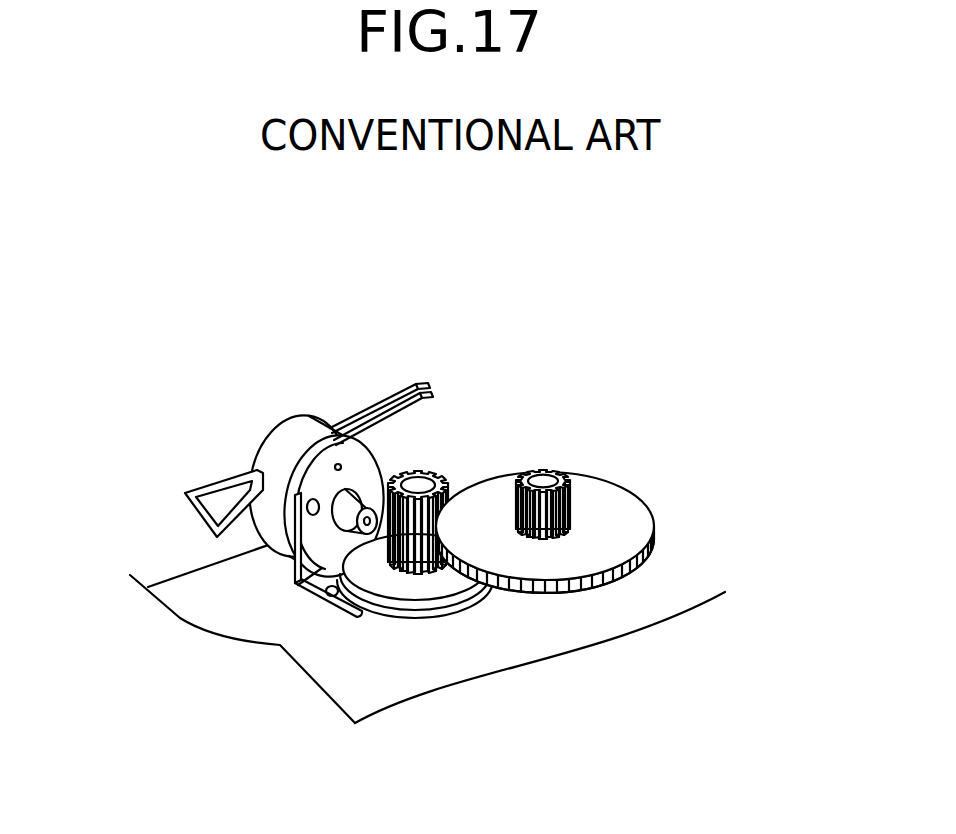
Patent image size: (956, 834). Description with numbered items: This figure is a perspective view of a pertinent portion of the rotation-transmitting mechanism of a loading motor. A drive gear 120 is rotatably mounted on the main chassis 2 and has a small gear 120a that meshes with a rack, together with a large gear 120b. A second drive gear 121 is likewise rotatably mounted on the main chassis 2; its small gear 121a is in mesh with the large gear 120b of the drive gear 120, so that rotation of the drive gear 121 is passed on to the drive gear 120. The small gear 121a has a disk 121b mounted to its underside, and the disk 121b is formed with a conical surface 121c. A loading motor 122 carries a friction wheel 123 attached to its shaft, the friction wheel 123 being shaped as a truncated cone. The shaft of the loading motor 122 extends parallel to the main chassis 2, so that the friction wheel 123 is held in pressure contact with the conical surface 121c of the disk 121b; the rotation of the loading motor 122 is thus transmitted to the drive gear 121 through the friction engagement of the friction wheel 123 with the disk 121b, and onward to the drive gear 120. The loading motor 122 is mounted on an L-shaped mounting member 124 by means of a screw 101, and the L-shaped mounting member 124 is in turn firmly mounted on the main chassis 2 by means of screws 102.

The main chassis 2 is at (227, 595).
The screw 101 is at (256, 466).
The screws 102 is at (335, 603).
The drive gear 120 is at (610, 597).
The small gear 120a is at (568, 507).
The large gear 120b is at (583, 590).
The drive gear 121 is at (414, 665).
The small gear 121a is at (427, 470).
The disk 121b is at (448, 582).
The conical surface 121c is at (427, 603).
The loading motor 122 is at (287, 455).
The friction wheel 123 is at (340, 503).
The L-shaped mounting member 124 is at (383, 462).